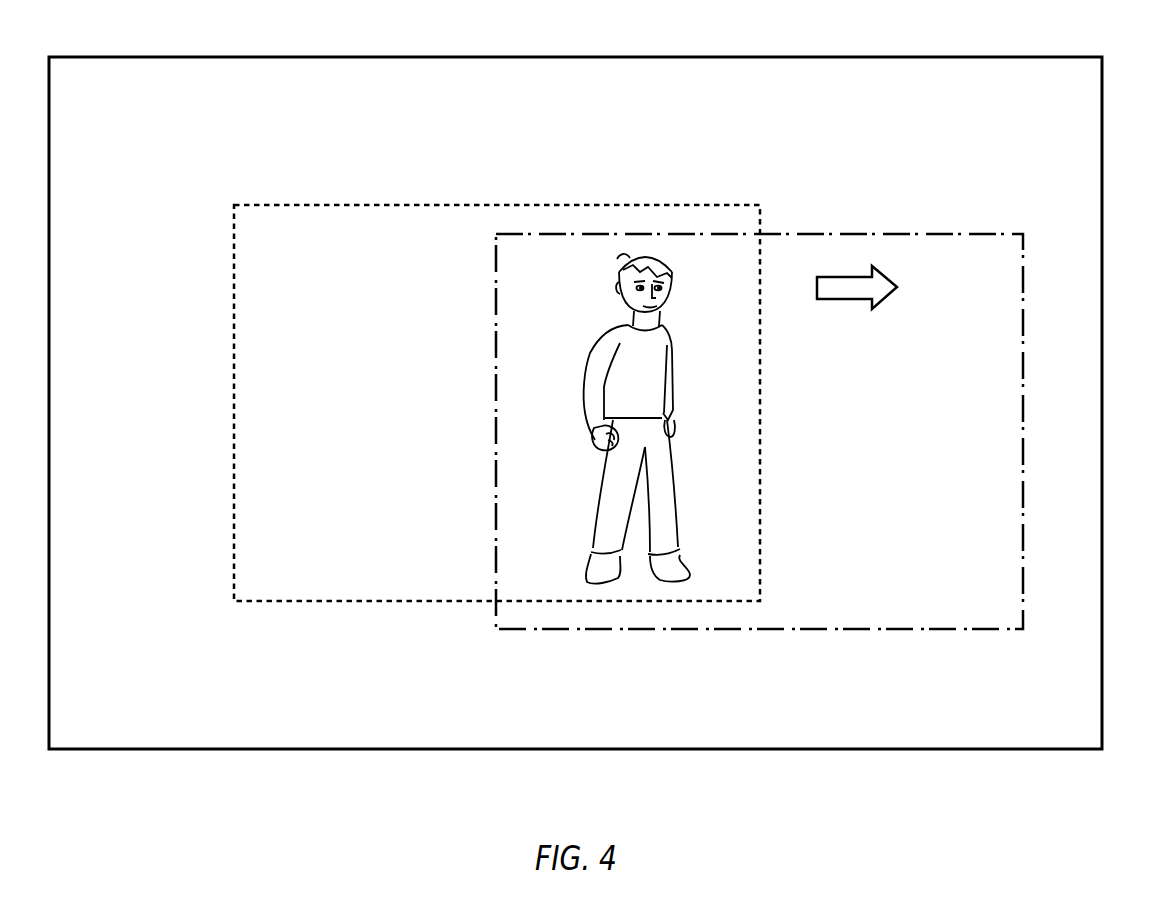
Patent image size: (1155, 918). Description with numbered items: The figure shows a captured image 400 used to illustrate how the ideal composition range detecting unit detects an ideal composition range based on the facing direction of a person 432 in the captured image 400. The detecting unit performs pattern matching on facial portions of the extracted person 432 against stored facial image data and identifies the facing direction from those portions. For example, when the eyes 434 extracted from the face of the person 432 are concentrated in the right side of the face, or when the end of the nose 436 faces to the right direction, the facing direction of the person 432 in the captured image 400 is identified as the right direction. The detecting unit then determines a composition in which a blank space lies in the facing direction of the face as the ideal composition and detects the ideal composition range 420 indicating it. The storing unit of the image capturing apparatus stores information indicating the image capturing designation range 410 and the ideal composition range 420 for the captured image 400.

The captured image 400 is at (578, 57).
The image capturing designation range 410 is at (370, 205).
The ideal composition range 420 is at (893, 234).
The person 432 is at (618, 258).
The eyes 434 is at (662, 280).
The nose 436 is at (668, 306).